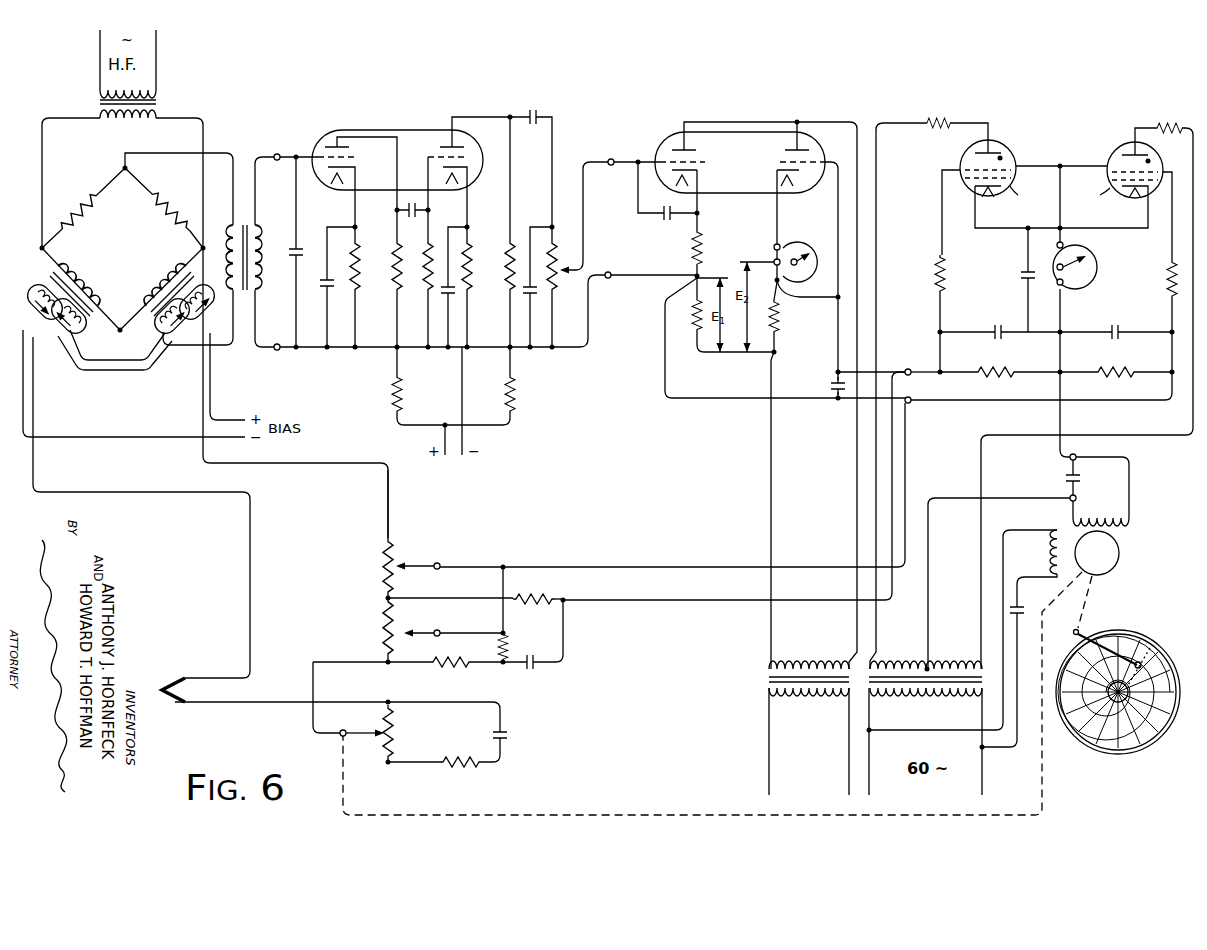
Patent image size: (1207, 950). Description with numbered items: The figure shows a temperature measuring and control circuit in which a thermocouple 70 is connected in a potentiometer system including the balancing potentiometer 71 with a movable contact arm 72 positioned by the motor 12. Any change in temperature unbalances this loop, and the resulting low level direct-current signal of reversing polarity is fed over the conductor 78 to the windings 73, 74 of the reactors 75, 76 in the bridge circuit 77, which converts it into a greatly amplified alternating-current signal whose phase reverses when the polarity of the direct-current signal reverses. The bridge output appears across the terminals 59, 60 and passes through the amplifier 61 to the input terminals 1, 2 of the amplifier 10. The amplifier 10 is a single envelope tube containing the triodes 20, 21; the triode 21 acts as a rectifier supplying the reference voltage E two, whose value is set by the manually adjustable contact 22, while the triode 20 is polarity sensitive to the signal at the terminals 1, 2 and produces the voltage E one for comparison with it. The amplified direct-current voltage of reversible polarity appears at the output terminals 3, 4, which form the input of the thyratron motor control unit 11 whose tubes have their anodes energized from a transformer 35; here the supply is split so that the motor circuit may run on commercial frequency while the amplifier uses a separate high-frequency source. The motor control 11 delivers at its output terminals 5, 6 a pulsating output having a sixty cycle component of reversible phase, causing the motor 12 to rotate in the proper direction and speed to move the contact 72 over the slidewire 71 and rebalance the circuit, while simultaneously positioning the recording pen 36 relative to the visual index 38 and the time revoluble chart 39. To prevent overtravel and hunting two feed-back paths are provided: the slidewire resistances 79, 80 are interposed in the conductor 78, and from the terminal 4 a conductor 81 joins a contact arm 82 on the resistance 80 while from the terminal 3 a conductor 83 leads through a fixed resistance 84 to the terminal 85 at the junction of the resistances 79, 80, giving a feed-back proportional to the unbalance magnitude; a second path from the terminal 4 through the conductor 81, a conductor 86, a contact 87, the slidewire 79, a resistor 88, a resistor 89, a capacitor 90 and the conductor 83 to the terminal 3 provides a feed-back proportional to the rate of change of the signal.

The input terminal 1 is at (609, 159).
The input terminal 2 is at (608, 272).
The output terminal 3 is at (908, 369).
The output terminal 4 is at (909, 403).
The output terminal 5 is at (1076, 498).
The output terminal 6 is at (1076, 456).
The amplifier 10 is at (741, 387).
The thyratron motor control unit 11 is at (1031, 387).
The reversing A.-C. motor 12 is at (1119, 553).
The triode 20 is at (657, 143).
The triode 21 is at (824, 145).
The manually adjustable contact 22 is at (795, 244).
The transformer 35 is at (792, 728).
The recording pen 36 is at (1083, 632).
The visual index 38 is at (1140, 661).
The time revoluble chart 39 is at (1118, 754).
The output terminal of bridge 59 is at (276, 351).
The output terminal of bridge 60 is at (277, 153).
The amplifier 61 is at (416, 175).
The thermocouple 70 is at (160, 686).
The balancing potentiometer 71 is at (445, 734).
The movable contact arm 72 is at (352, 720).
The reactor winding 73 is at (81, 329).
The reactor winding 74 is at (158, 331).
The reactor 75 is at (76, 288).
The reactor 76 is at (165, 288).
The bridge circuit 77 is at (123, 249).
The conductor 78 is at (389, 504).
The slidewire resistance 79 is at (385, 633).
The slidewire resistance 80 is at (384, 566).
The conductor 81 is at (622, 567).
The contact arm 82 is at (436, 564).
The conductor 83 is at (628, 604).
The fixed resistance 84 is at (535, 598).
The terminal 85 is at (385, 598).
The conductor 86 is at (502, 618).
The contact 87 is at (436, 631).
The resistor 88 is at (449, 668).
The resistor 89 is at (506, 648).
The capacitor 90 is at (530, 668).